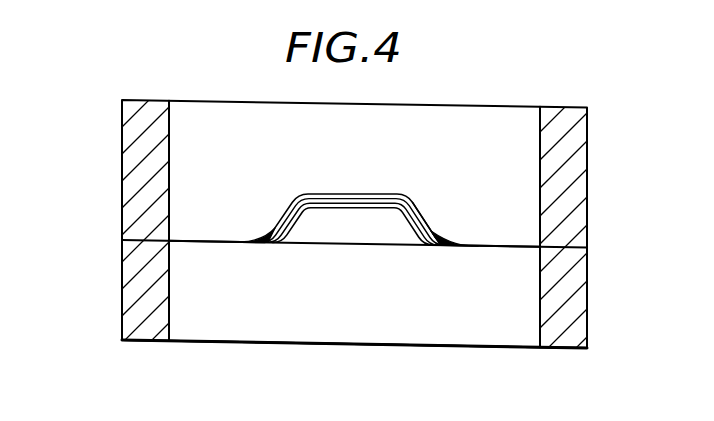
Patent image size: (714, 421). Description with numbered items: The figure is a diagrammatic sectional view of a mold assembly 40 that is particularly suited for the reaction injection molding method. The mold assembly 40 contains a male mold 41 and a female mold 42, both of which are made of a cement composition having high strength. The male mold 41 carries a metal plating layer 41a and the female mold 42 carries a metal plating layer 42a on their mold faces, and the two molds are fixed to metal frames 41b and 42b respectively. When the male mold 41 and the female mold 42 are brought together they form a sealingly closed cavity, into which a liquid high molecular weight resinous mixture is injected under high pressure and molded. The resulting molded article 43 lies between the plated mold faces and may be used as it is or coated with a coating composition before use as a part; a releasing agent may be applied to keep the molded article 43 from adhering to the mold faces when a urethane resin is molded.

The mold assembly 40 is at (463, 348).
The male mold 41 is at (510, 287).
The metal plating layer 41a is at (354, 261).
The metal frame 41b is at (133, 266).
The female mold 42 is at (503, 110).
The metal plating layer 42a is at (422, 205).
The metal frame 42b is at (150, 150).
The molded article 43 is at (333, 247).